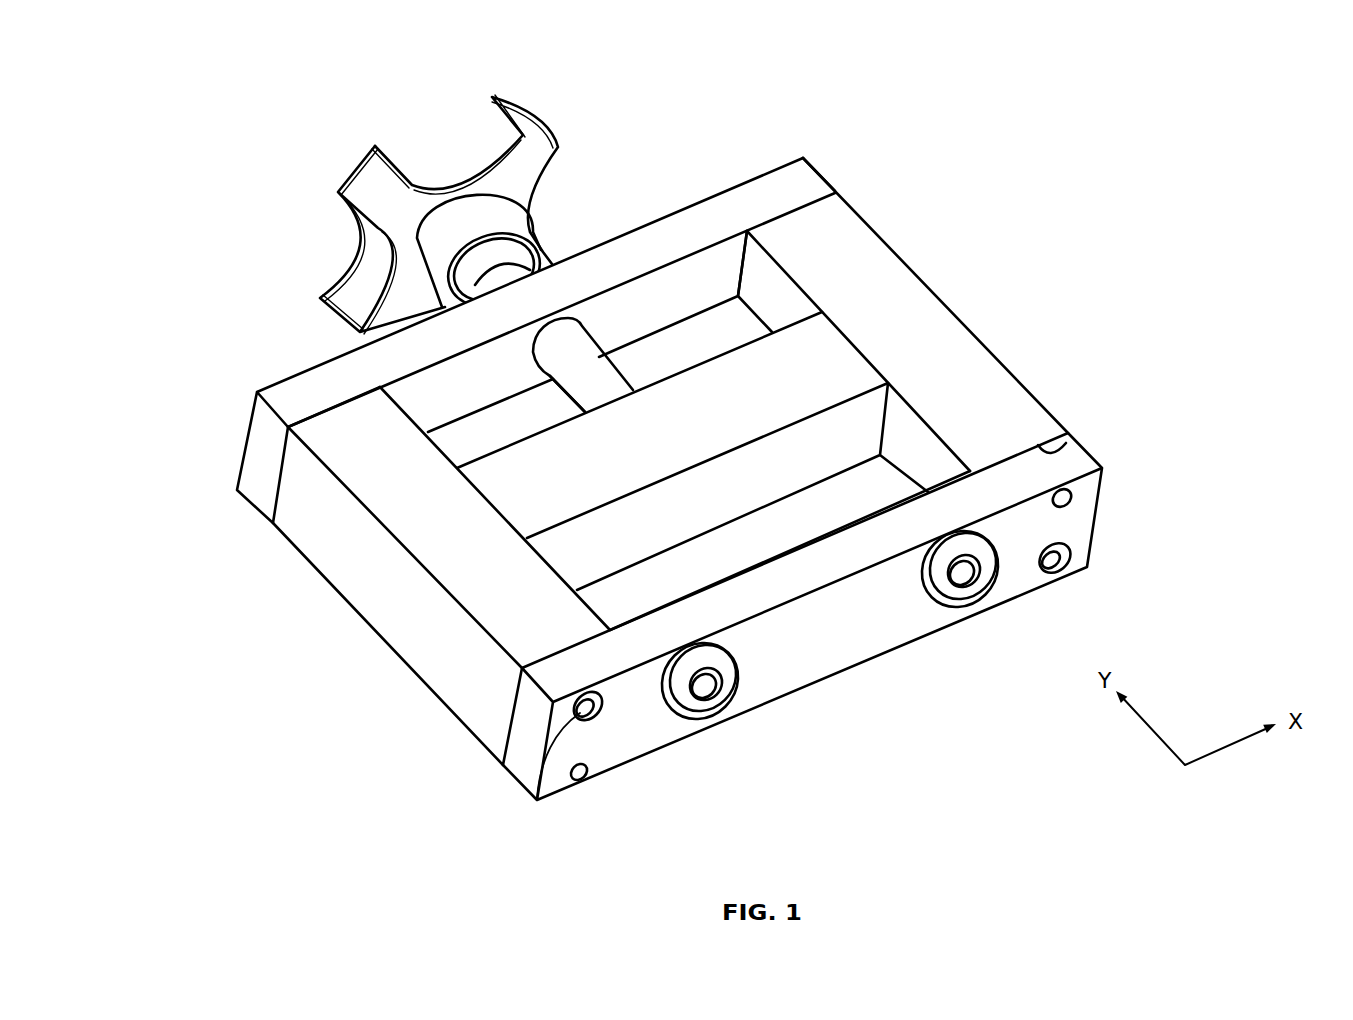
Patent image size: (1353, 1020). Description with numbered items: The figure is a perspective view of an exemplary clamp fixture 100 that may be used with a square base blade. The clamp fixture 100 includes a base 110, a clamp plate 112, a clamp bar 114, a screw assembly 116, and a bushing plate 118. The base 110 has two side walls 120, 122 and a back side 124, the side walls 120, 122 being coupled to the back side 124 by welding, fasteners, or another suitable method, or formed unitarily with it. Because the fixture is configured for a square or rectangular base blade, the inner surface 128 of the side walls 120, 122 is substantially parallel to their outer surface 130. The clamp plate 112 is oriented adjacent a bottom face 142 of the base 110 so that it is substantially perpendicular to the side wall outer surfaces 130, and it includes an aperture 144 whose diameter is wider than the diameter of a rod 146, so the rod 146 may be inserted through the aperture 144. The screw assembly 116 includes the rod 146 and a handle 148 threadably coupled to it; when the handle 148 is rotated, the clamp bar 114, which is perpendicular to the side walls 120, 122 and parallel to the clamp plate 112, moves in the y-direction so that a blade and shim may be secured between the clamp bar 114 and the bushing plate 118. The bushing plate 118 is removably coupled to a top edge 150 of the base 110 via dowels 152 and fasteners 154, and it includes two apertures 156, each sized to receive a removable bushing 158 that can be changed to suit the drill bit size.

The clamp fixture 100 is at (186, 124).
The base 110 is at (342, 638).
The clamp plate 112 is at (752, 188).
The clamp bar 114 is at (847, 356).
The screw assembly 116 is at (548, 213).
The bushing plate 118 is at (1072, 532).
The side wall 120 is at (388, 489).
The side wall 122 is at (886, 256).
The back side 124 is at (675, 430).
The inner surface 128 is at (422, 708).
The outer surface 130 is at (1027, 327).
The bottom face 142 is at (818, 193).
The aperture 144 is at (533, 349).
The rod 146 is at (580, 397).
The handle 148 is at (453, 143).
The top edge 150 is at (1072, 440).
The dowels 152 is at (1070, 492).
The fasteners 154 is at (520, 778).
The apertures 156 is at (718, 692).
The bushing 158 is at (693, 708).